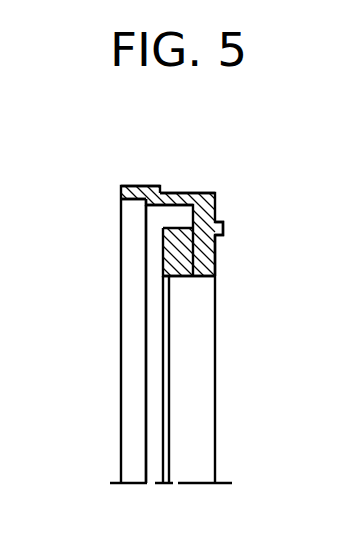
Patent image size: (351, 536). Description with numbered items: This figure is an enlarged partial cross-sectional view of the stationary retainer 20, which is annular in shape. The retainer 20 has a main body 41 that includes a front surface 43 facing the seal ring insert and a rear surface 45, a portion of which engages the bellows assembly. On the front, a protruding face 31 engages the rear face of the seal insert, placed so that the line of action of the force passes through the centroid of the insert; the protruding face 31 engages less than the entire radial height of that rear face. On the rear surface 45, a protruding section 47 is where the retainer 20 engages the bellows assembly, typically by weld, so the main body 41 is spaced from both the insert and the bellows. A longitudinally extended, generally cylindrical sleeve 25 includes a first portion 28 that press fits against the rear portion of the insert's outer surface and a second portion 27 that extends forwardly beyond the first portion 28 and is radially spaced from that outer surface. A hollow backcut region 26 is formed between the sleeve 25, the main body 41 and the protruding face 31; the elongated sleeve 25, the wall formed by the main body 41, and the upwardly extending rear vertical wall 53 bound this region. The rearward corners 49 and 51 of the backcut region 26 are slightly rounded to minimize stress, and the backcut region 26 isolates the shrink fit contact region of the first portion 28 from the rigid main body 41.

The sleeve 25 is at (143, 170).
The second portion 27 is at (121, 186).
The first portion 28 is at (146, 213).
The backcut region 26 is at (176, 210).
The rear vertical wall 53 is at (207, 197).
The stationary retainer 20 is at (215, 208).
The protruding section 47 is at (224, 221).
The main body 41 is at (203, 257).
The front surface 43 is at (168, 261).
The rearward corner 51 is at (200, 275).
The rear surface 45 is at (216, 247).
The rearward corner 49 is at (193, 208).
The protruding face 31 is at (163, 237).